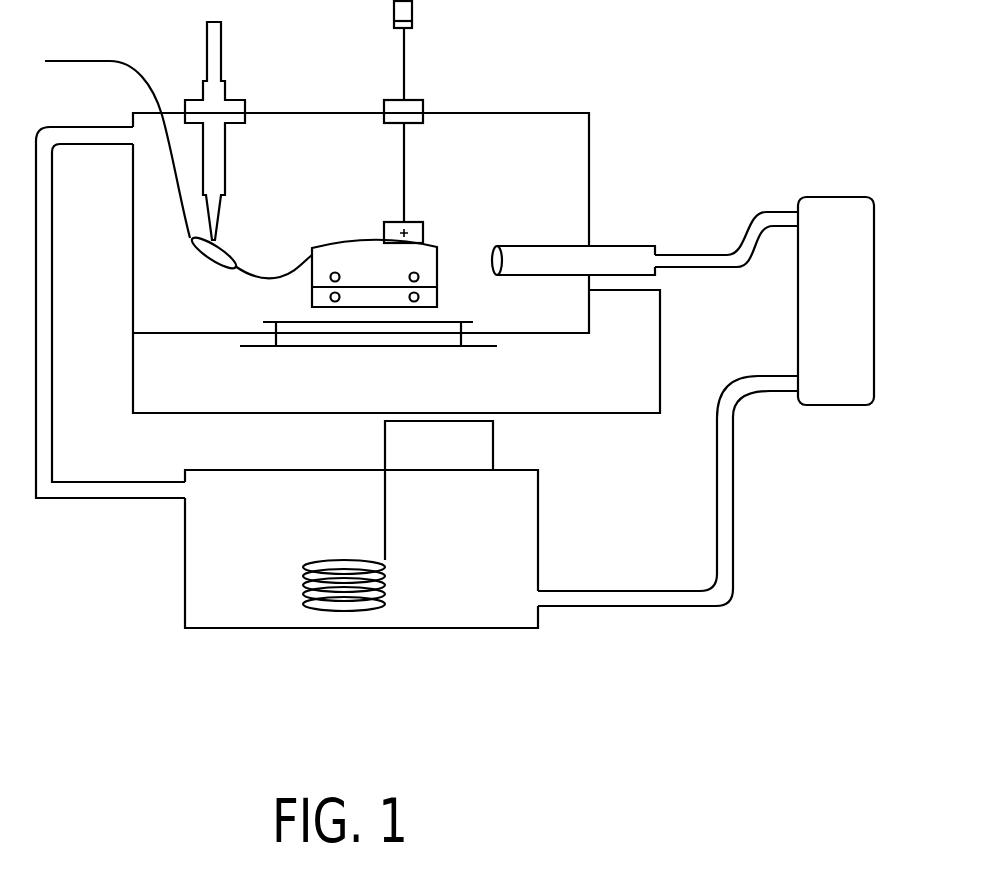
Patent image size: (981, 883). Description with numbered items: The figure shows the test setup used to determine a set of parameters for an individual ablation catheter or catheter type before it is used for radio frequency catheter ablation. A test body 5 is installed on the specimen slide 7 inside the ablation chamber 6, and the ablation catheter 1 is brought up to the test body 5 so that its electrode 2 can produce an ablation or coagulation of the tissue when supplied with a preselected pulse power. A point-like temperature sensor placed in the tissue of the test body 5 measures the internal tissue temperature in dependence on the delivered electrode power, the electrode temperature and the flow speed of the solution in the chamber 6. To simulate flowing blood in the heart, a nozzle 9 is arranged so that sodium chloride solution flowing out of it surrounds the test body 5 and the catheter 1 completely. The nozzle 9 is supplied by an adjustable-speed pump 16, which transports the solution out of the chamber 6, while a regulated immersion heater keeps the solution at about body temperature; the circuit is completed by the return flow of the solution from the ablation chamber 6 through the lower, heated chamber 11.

The ablation catheter 1 is at (284, 268).
The electrode 2 is at (302, 270).
The test body 5 is at (352, 262).
The ablation chamber 6 is at (599, 97).
The specimen slide 7 is at (452, 320).
The nozzle 9 is at (624, 252).
The lower heated chamber 11 is at (254, 660).
The adjustable-speed pump 16 is at (828, 206).